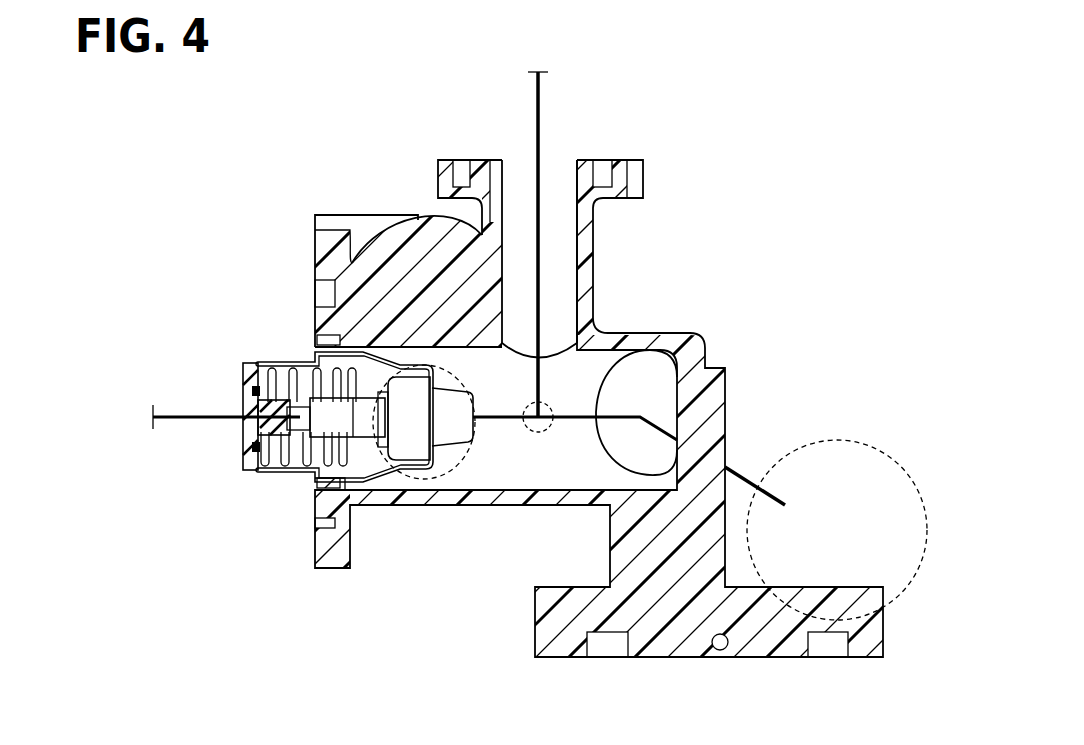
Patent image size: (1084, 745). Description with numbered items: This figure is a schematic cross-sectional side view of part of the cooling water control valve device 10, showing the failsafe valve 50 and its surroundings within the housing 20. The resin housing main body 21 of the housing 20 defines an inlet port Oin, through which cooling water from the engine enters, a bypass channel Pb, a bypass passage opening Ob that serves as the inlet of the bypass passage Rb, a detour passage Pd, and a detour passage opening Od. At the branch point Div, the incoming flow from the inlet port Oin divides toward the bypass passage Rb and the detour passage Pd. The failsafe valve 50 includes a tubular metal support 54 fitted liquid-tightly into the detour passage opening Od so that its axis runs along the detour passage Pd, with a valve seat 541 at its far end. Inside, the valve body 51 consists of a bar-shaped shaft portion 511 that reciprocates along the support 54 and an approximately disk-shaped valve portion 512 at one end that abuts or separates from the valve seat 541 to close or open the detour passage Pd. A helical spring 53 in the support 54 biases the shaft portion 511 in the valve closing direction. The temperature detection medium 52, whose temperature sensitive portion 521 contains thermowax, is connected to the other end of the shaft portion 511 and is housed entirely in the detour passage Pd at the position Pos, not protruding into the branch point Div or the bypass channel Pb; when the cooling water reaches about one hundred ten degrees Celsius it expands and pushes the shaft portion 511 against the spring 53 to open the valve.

The cooling water control valve device 10 is at (671, 103).
The housing 20 is at (351, 194).
The housing main body 21 is at (413, 230).
The failsafe valve 50 is at (380, 478).
The valve body 51 is at (278, 372).
The shaft portion 511 is at (353, 428).
The valve portion 512 is at (262, 430).
The temperature detection medium 52 is at (410, 455).
The temperature sensitive portion 521 is at (458, 440).
The spring 53 is at (272, 366).
The support 54 is at (288, 362).
The valve seat 541 is at (243, 388).
The bypass passage Rb is at (545, 118).
The bypass passage opening Ob is at (550, 352).
The bypass channel Pb is at (657, 428).
The detour passage Pd is at (499, 420).
The position Pos is at (440, 480).
The branch point Div is at (538, 432).
The detour passage opening Od is at (315, 497).
The inlet port Oin is at (837, 440).